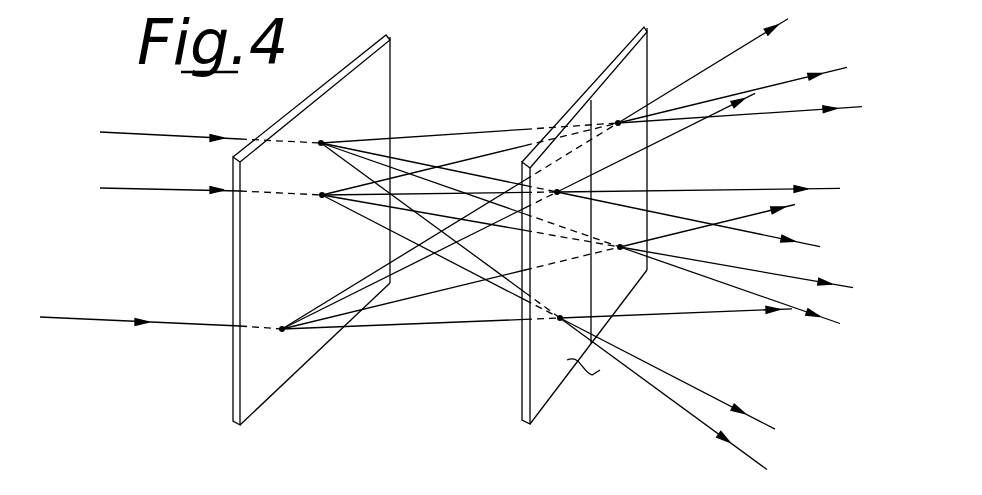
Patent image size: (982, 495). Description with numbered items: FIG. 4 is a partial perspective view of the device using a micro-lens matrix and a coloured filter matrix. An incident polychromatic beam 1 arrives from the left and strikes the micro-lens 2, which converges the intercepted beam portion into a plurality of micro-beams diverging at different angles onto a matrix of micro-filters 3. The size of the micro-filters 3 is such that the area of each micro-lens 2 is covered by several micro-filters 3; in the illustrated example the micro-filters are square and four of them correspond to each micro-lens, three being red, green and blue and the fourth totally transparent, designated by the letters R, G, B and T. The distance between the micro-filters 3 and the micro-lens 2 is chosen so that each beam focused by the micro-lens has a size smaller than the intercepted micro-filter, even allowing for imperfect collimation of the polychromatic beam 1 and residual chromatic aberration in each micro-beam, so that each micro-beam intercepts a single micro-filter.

The polychromatic beam 1 is at (168, 137).
The micro-lens 2 is at (370, 88).
The micro-filters 3 is at (580, 118).